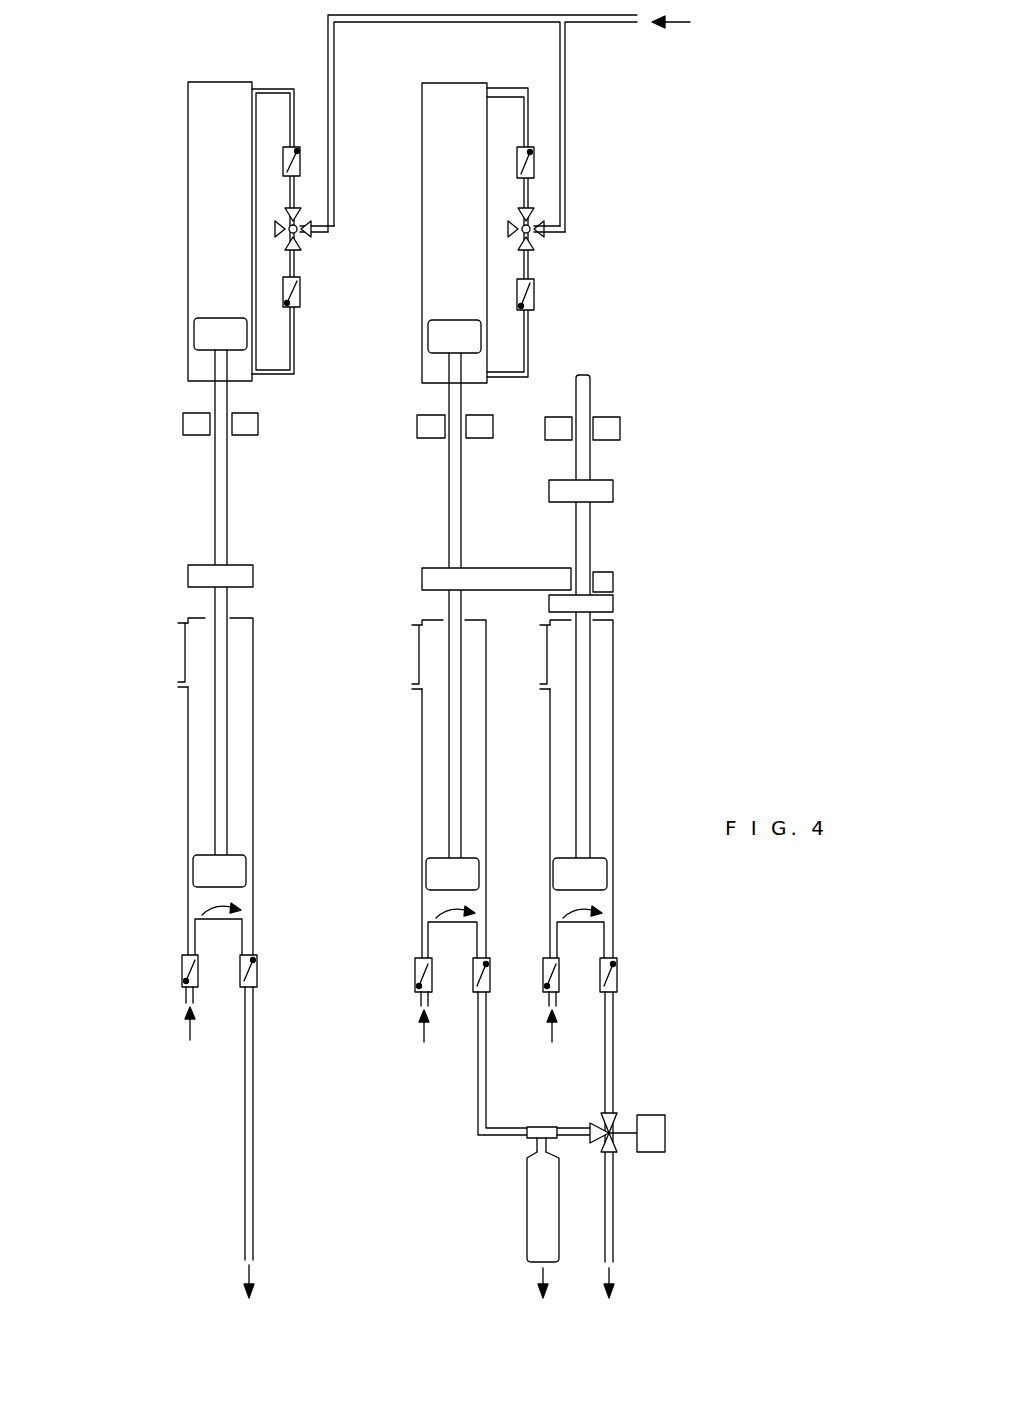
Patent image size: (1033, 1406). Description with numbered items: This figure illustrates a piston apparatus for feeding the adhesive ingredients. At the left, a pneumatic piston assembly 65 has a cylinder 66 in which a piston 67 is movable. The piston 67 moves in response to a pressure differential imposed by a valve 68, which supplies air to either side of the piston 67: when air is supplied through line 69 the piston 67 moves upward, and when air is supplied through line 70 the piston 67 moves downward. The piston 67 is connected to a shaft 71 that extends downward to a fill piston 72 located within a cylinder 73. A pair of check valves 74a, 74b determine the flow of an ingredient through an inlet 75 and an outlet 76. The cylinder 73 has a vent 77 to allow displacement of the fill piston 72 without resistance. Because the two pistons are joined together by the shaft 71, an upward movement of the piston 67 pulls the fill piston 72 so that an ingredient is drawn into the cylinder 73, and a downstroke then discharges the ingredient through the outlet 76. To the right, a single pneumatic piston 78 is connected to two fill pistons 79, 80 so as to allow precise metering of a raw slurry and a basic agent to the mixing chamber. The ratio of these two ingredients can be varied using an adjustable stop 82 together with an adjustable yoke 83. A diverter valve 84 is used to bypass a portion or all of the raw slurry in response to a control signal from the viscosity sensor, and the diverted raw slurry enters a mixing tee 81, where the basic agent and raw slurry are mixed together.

The pneumatic piston assembly 65 is at (180, 158).
The cylinder 66 is at (188, 248).
The piston 67 is at (196, 332).
The valve 68 is at (302, 238).
The line 69 is at (297, 343).
The line 70 is at (278, 86).
The shaft 71 is at (212, 478).
The fill piston 72 is at (205, 872).
The cylinder 73 is at (186, 752).
The check valve 74a is at (180, 963).
The check valve 74b is at (259, 975).
The inlet 75 is at (186, 998).
The outlet 76 is at (255, 1078).
The vent 77 is at (180, 682).
The pneumatic piston 78 is at (446, 68).
The fill piston 79 is at (414, 786).
The fill piston 80 is at (626, 746).
The mixing tee 81 is at (542, 1128).
The adjustable stop 82 is at (615, 490).
The adjustable yoke 83 is at (615, 603).
The diverter valve 84 is at (616, 1120).